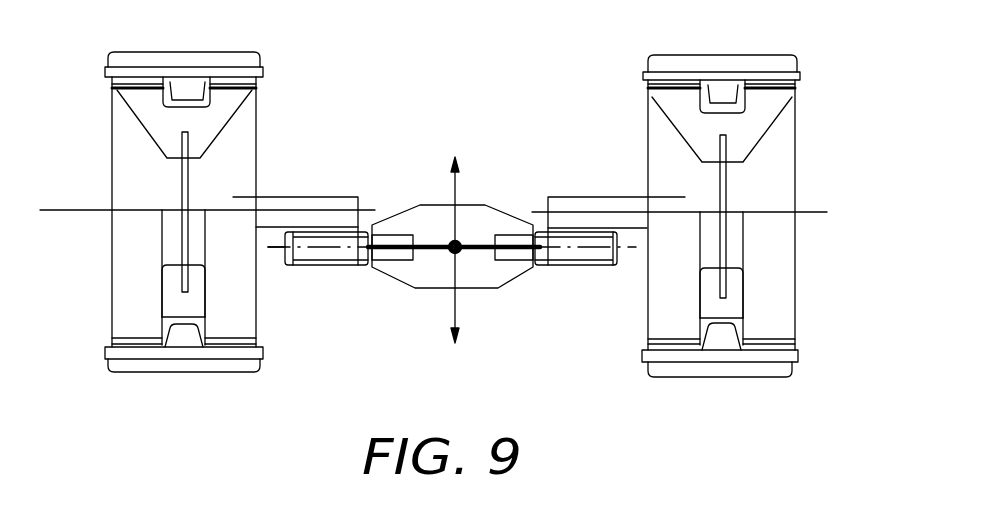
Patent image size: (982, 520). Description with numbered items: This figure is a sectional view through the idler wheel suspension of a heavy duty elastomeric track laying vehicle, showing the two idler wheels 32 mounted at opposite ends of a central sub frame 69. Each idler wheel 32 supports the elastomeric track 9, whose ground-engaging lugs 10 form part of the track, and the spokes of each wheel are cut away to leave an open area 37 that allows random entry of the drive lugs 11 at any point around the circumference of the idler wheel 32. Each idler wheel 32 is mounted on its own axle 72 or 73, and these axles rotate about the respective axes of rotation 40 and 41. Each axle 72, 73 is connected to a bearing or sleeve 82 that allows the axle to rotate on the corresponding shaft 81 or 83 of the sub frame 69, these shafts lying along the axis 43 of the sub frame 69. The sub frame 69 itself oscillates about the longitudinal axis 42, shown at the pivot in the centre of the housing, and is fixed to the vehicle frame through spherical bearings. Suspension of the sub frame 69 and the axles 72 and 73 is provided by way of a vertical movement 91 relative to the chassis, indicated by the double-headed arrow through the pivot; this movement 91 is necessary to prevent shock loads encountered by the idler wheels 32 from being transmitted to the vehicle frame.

The elastomeric track 9 is at (797, 72).
The lugs 10 is at (765, 65).
The drive lugs 11 is at (718, 93).
The idler wheel 32 is at (108, 268).
The open area 37 is at (650, 97).
The axis of rotation 40 is at (80, 208).
The axis of rotation 41 is at (827, 173).
The longitudinal axis 42 is at (442, 252).
The axis 43 is at (277, 245).
The sub frame 69 is at (488, 275).
The axle 72 is at (297, 205).
The axle 73 is at (585, 207).
The shaft 81 is at (337, 255).
The bearing or sleeve 82 is at (298, 265).
The shaft 83 is at (567, 255).
The vertical movement 91 is at (458, 190).